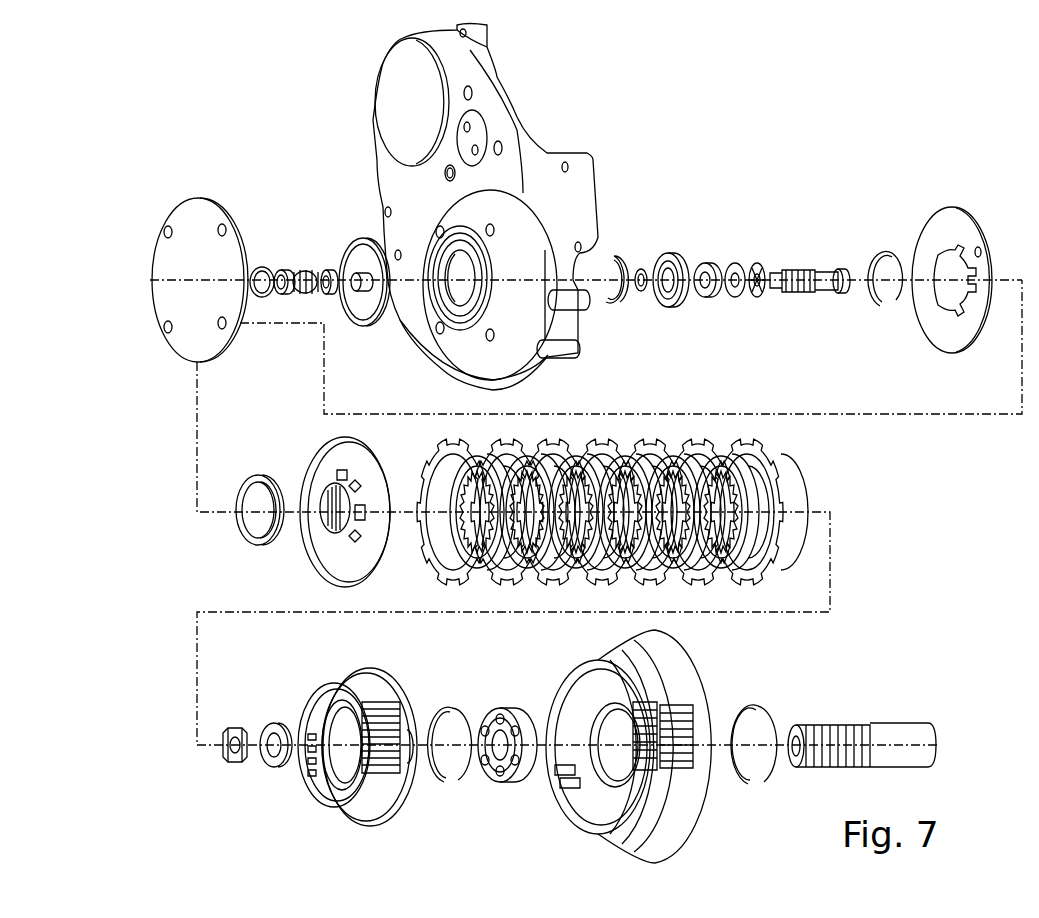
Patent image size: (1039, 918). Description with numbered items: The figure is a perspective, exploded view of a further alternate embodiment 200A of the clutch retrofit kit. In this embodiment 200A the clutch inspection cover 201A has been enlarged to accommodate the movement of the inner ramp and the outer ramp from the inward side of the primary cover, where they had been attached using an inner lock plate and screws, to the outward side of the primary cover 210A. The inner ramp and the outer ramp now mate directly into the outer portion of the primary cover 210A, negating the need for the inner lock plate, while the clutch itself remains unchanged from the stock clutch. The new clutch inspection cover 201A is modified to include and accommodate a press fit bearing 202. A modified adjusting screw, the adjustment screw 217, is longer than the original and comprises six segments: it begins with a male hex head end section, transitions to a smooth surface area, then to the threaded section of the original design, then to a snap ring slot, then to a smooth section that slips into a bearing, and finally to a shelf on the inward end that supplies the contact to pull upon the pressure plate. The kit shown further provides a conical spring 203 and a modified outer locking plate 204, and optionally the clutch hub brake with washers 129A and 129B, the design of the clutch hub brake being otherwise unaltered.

The embodiment 200A is at (768, 122).
The clutch inspection cover 201A is at (240, 184).
The press fit bearing 202 is at (280, 270).
The conical spring 203 is at (305, 292).
The modified outer locking plate 204 is at (326, 270).
The primary cover 210A is at (527, 104).
The washer 129A is at (736, 265).
The washer 129B is at (760, 264).
The adjustment screw 217 is at (815, 256).